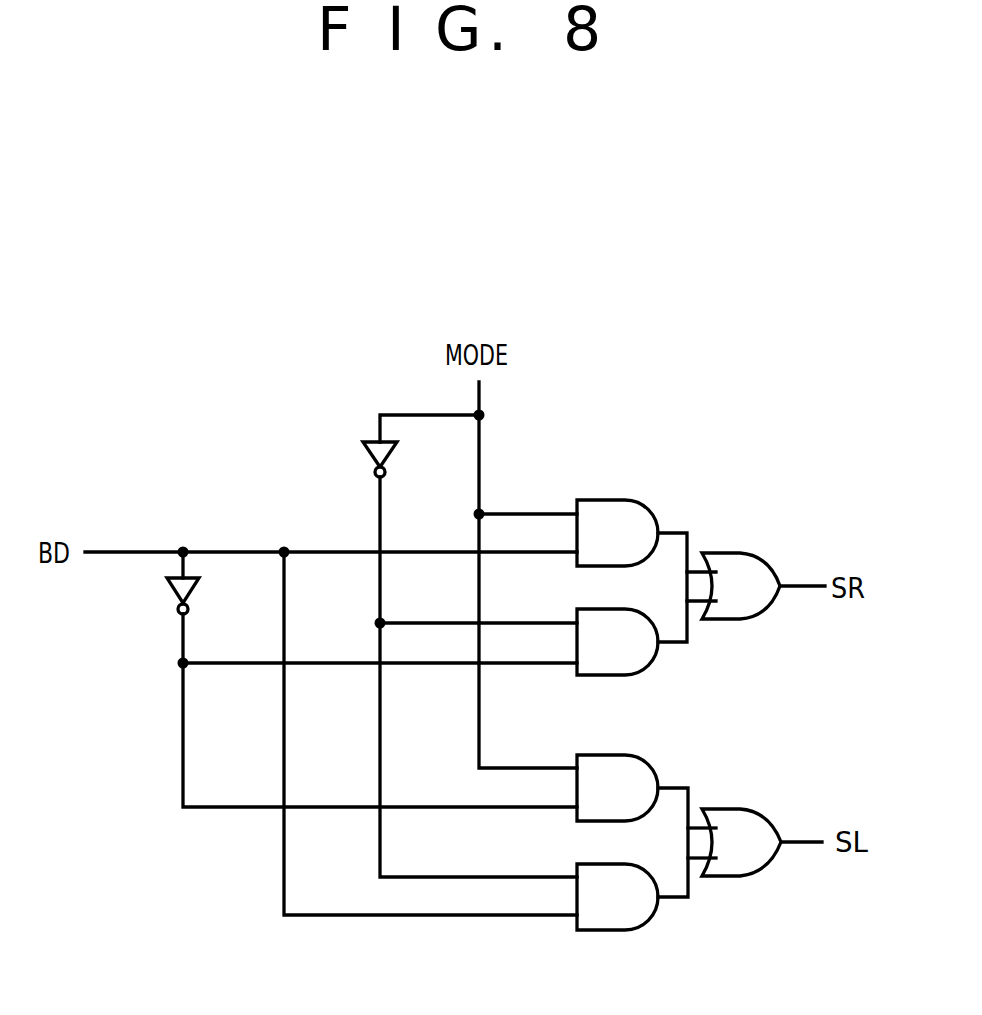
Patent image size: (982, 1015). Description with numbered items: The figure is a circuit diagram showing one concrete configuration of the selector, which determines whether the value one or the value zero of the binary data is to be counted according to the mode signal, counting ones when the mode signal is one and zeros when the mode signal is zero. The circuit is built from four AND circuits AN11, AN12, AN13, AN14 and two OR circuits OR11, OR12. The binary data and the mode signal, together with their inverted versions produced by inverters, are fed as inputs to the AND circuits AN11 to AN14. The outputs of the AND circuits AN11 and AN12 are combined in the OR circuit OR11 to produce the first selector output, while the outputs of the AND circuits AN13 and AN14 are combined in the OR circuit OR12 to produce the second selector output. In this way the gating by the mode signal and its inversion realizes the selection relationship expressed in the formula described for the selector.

The AND circuit AN11 is at (633, 500).
The AND circuit AN12 is at (633, 675).
The AND circuit AN13 is at (633, 756).
The AND circuit AN14 is at (633, 930).
The OR circuit OR11 is at (745, 553).
The OR circuit OR12 is at (745, 809).